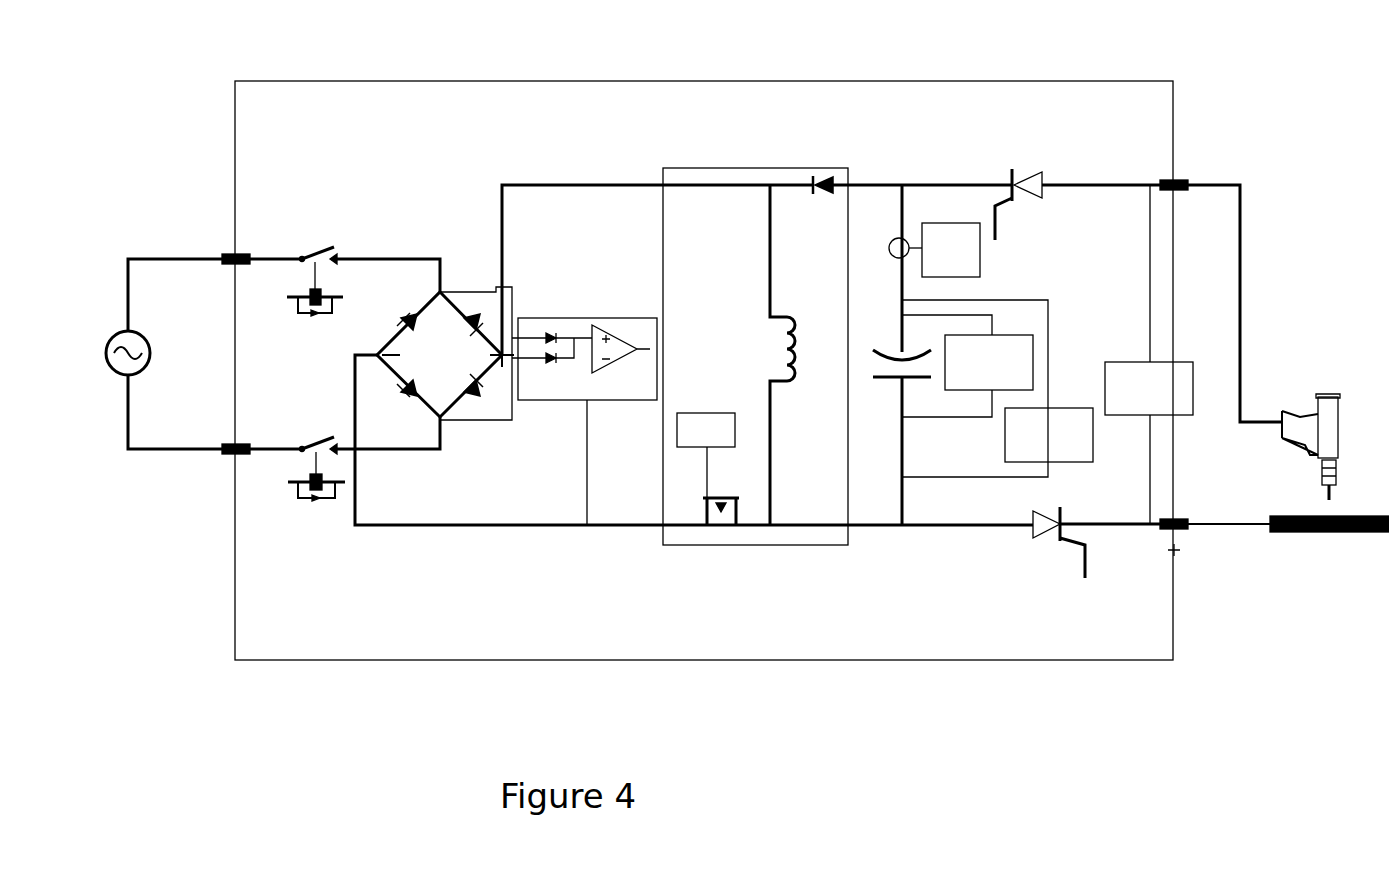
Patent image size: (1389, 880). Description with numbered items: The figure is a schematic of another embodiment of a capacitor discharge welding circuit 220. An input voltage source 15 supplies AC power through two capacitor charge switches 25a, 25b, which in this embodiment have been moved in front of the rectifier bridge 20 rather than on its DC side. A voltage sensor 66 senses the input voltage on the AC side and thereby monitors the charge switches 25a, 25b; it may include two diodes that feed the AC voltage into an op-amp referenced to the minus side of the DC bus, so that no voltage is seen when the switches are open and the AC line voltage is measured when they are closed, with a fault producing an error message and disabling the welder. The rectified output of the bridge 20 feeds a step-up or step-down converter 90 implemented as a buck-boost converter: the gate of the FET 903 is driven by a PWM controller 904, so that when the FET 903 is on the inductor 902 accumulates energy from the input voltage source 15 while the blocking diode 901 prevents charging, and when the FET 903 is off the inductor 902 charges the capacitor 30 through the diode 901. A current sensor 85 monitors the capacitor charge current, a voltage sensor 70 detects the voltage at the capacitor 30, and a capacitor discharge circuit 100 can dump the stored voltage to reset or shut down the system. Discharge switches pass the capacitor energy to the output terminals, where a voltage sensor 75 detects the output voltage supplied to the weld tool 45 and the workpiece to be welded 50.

The capacitor discharge welding circuit 220 is at (645, 72).
The input voltage source 15 is at (84, 380).
The capacitor charge switch 25a is at (300, 270).
The capacitor charge switch 25b is at (310, 440).
The rectifier bridge 20 is at (392, 320).
The voltage sensor 66 is at (598, 312).
The step-up or step-down converter 90 is at (765, 163).
The blocking diode 901 is at (820, 198).
The inductor 902 is at (765, 333).
The FET 903 is at (725, 548).
The PWM controller 904 is at (732, 408).
The capacitor 30 is at (888, 392).
The current sensor 85 is at (985, 262).
The voltage sensor 70 is at (1000, 330).
The capacitor discharge circuit 100 is at (1062, 406).
The voltage sensor 75 is at (1133, 420).
The weld tool 45 is at (1325, 392).
The workpiece to be welded 50 is at (1305, 535).